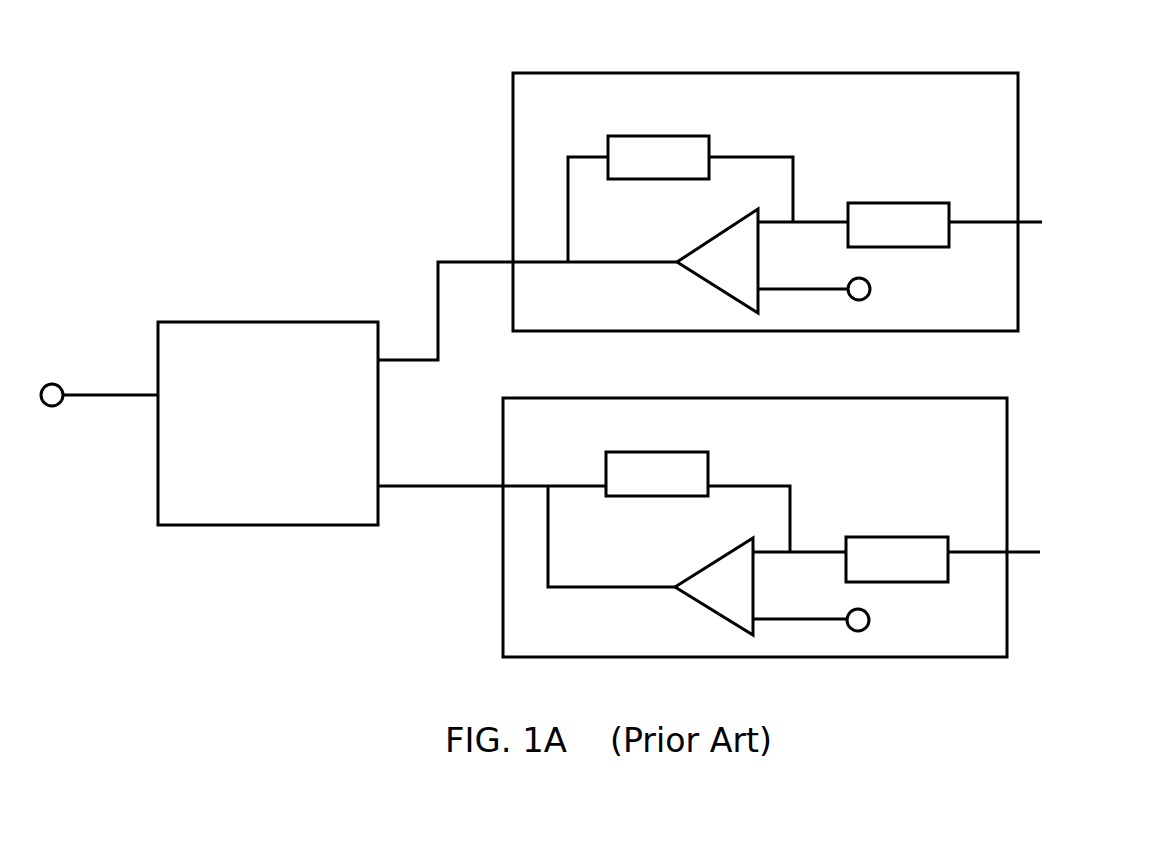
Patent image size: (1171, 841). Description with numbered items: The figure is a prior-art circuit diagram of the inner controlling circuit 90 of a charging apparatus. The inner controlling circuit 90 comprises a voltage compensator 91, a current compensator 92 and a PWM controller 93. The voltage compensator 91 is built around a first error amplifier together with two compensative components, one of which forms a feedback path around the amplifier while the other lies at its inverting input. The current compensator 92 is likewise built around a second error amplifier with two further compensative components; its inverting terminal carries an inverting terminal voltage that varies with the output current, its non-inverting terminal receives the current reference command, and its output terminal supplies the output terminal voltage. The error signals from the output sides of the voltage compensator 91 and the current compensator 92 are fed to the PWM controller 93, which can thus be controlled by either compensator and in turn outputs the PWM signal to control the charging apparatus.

The inner controlling circuit 90 is at (1053, 71).
The voltage compensator 91 is at (777, 202).
The current compensator 92 is at (771, 527).
The PWM controller 93 is at (268, 423).